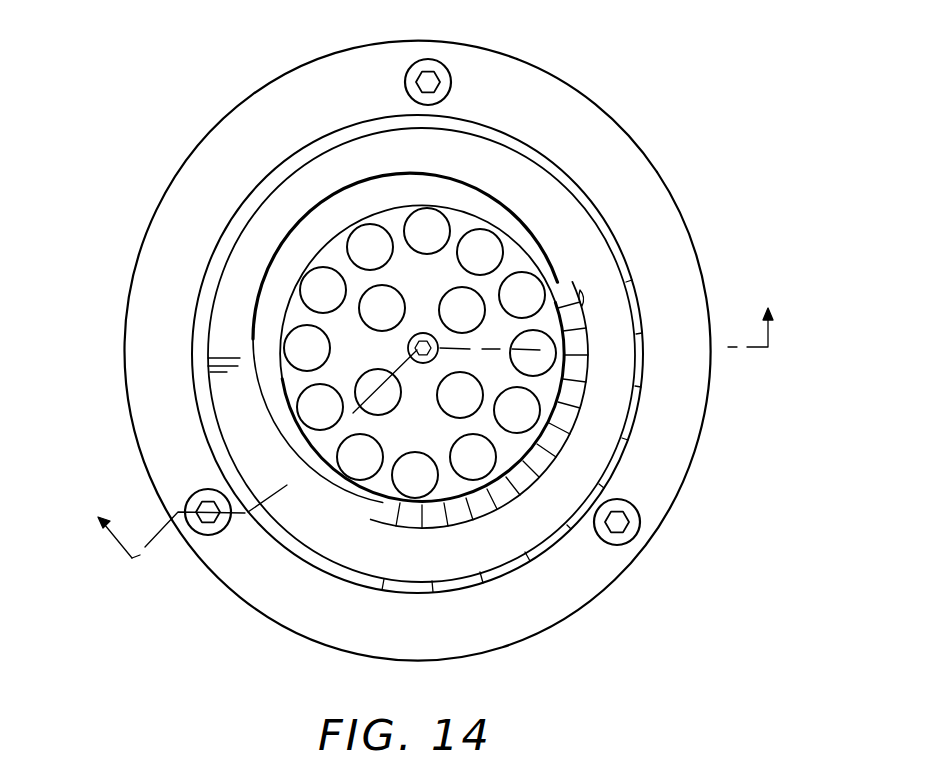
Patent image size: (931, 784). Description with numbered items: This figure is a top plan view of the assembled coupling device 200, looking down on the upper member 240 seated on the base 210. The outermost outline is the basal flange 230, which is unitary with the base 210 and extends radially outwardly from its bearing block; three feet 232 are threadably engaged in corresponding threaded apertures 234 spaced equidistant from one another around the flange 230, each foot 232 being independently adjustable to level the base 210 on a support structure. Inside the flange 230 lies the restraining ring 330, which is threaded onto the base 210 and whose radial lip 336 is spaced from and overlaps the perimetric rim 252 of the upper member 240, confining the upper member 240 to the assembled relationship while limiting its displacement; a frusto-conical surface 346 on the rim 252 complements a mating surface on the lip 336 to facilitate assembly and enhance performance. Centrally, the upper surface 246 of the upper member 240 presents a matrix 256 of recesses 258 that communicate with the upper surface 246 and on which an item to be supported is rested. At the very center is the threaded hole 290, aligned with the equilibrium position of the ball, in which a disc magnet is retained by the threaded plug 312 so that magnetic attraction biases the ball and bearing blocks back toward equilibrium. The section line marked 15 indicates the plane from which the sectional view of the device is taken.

The section line 15- 15 is at (430, 420).
The coupling device 200 is at (180, 174).
The base 210 is at (600, 118).
The basal flange 230 is at (298, 82).
The feet 232 is at (452, 87).
The threaded apertures 234 is at (430, 62).
The upper member 240 is at (565, 384).
The upper surface 246 is at (392, 215).
The perimetric rim 252 is at (438, 518).
The matrix 256 is at (450, 218).
The recesses 258 is at (500, 257).
The threaded hole 290 is at (427, 364).
The threaded plug 312 is at (423, 332).
The restraining ring 330 is at (627, 253).
The radial lip 336 is at (590, 317).
The frusto-conical surface 346 is at (560, 430).